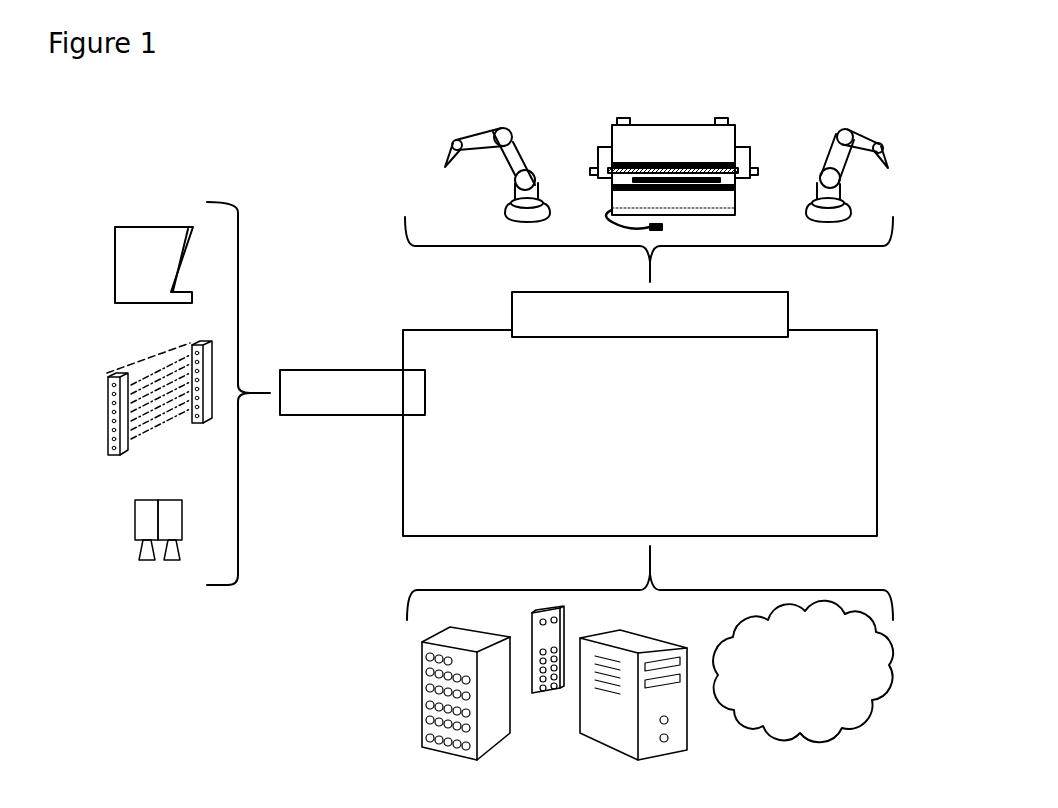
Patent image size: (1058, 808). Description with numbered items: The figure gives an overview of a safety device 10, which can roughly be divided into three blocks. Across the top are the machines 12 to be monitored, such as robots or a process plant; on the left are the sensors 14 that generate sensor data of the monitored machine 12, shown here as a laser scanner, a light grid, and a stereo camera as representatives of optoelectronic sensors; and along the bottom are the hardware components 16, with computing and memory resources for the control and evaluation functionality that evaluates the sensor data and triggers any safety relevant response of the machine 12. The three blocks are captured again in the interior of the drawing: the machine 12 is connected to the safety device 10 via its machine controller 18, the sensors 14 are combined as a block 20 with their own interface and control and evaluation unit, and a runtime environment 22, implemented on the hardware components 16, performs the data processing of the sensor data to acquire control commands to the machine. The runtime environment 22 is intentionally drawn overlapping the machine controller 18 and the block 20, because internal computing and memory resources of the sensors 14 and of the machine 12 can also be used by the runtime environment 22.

The safety device 10 is at (318, 130).
The machine 12 is at (782, 90).
The sensor 14 is at (108, 548).
The hardware component 16 is at (902, 760).
The machine controller 18 is at (775, 305).
The block 20 is at (325, 370).
The runtime environment 22 is at (858, 475).